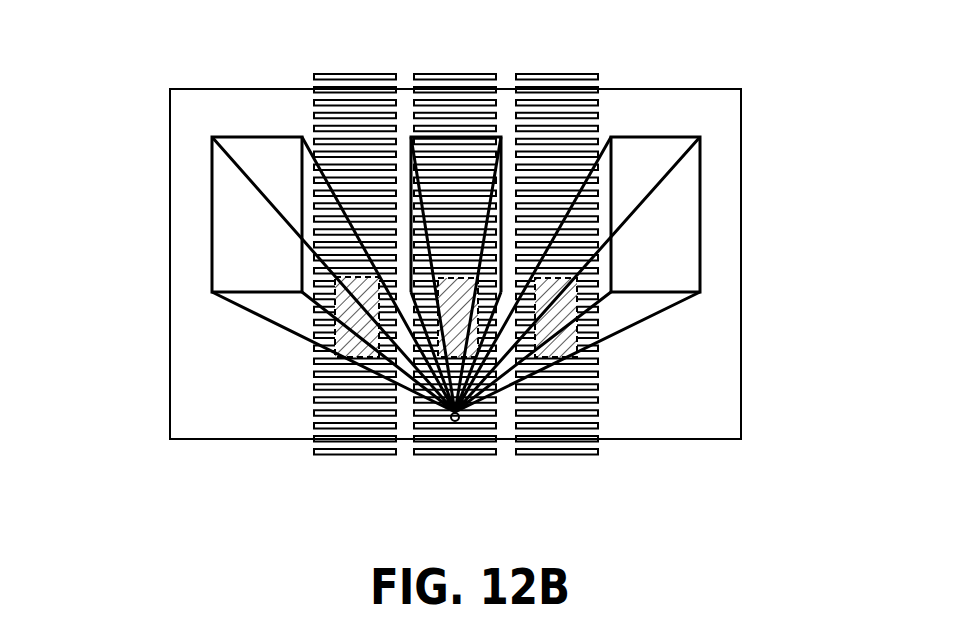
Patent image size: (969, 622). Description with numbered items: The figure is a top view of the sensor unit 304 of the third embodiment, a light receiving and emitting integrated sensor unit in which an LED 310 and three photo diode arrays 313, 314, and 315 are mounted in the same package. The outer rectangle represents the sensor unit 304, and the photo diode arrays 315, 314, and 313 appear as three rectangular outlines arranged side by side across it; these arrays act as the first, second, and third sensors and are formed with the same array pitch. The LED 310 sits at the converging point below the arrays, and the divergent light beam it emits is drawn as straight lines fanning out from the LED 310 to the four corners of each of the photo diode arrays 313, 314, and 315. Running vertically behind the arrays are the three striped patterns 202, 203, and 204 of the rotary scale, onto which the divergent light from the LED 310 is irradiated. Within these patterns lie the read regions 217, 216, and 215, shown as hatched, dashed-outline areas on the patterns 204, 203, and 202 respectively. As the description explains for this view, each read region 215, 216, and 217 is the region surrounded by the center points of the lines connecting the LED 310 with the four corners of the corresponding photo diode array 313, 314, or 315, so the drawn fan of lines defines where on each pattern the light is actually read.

The sensor unit 304 is at (741, 192).
The photo diode array 315 is at (273, 137).
The photo diode array 314 is at (463, 137).
The photo diode array 313 is at (673, 137).
The pattern 204 is at (352, 457).
The pattern 203 is at (472, 454).
The pattern 202 is at (578, 457).
The read region 217 is at (333, 334).
The read region 216 is at (402, 363).
The read region 215 is at (584, 337).
The LED 310 is at (460, 413).